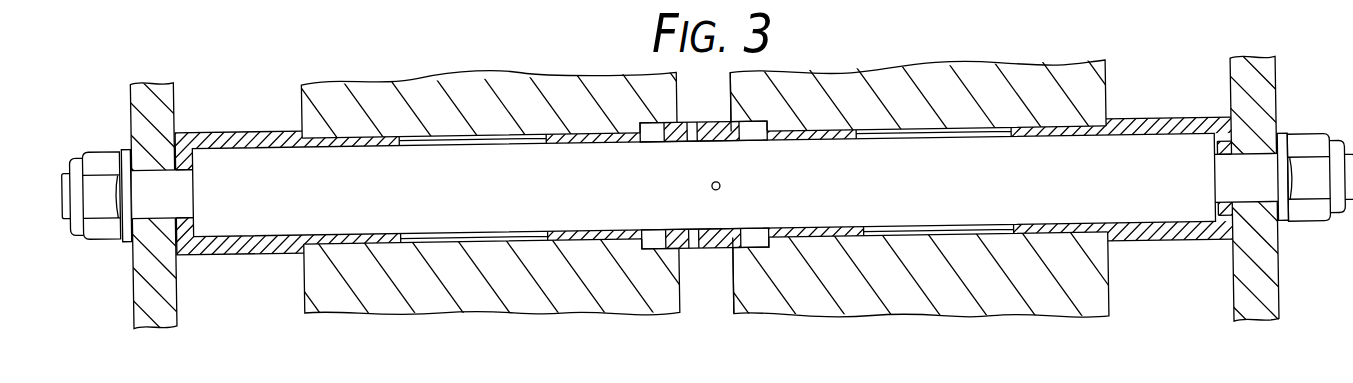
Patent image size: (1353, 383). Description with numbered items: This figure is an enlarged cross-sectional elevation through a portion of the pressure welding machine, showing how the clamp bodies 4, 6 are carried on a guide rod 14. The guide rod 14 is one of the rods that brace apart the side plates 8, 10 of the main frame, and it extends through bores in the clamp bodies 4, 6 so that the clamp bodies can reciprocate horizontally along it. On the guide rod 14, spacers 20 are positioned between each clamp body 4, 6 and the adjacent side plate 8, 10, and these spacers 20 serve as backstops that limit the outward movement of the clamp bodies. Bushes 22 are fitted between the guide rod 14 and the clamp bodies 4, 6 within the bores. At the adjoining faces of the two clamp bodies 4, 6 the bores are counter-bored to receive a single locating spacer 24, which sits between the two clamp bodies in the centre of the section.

The clamp body 4 is at (485, 298).
The clamp body 6 is at (930, 302).
The side plate 8 is at (144, 298).
The side plate 10 is at (1262, 275).
The guide rod 14 is at (661, 202).
The spacer 20 is at (249, 250).
The bush 22 is at (581, 233).
The locating spacer 24 is at (717, 252).